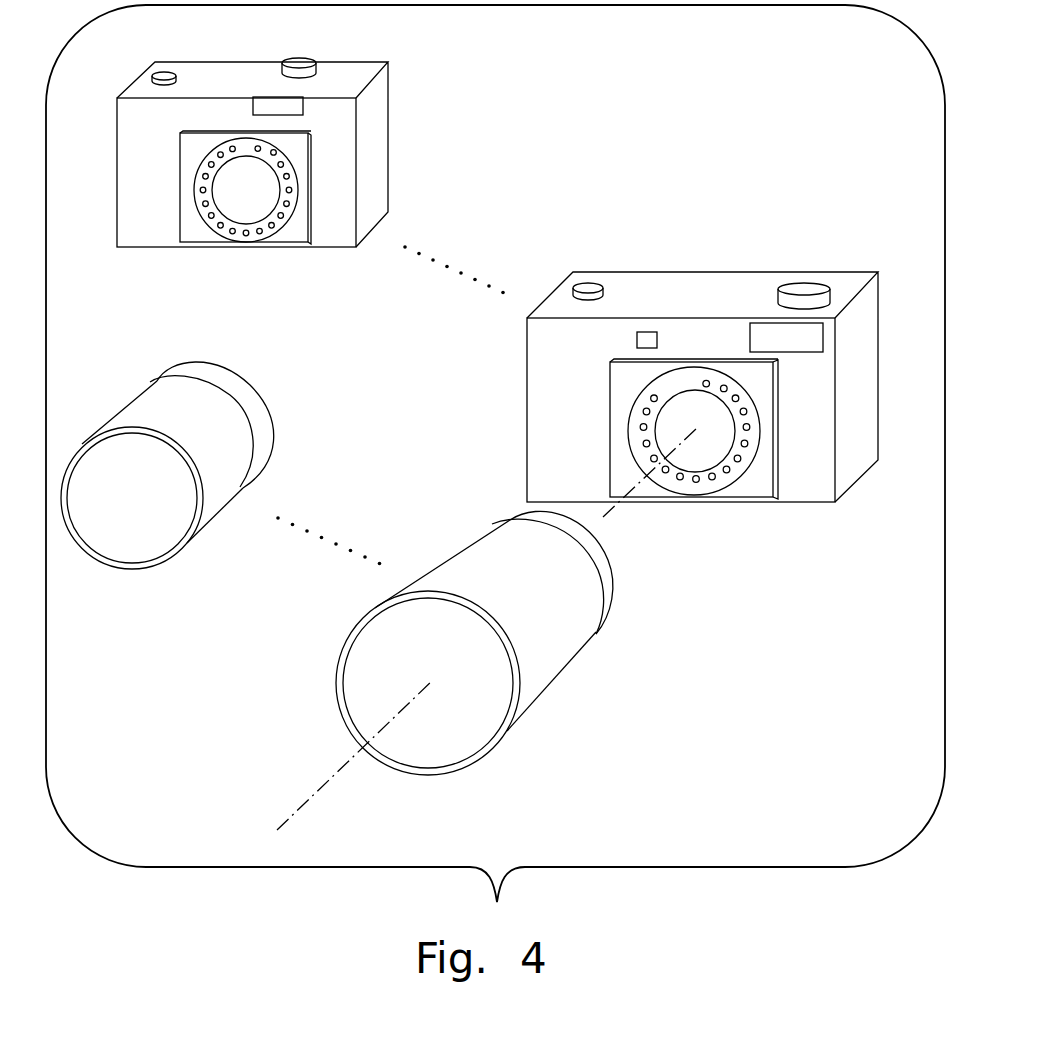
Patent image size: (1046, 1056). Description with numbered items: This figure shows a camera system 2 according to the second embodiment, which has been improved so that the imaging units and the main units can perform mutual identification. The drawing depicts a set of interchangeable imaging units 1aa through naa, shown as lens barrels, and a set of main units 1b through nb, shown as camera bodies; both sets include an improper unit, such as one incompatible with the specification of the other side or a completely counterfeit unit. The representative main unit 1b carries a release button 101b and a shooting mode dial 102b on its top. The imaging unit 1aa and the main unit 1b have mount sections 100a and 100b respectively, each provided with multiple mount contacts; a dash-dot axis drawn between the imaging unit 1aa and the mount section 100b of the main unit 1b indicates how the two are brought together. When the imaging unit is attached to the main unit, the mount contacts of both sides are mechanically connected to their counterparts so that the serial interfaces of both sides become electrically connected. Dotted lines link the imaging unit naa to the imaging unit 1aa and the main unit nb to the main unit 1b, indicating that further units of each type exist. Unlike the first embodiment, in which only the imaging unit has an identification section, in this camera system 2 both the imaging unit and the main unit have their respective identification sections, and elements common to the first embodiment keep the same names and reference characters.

The camera system 2 is at (740, 179).
The main unit 1b is at (730, 385).
The release button 101b is at (590, 283).
The shooting mode dial 102b is at (806, 283).
The mount section 100b is at (747, 442).
The imaging unit 1aa is at (543, 643).
The mount section 100a is at (593, 558).
The main unit nb is at (375, 153).
The imaging unit naa is at (143, 417).